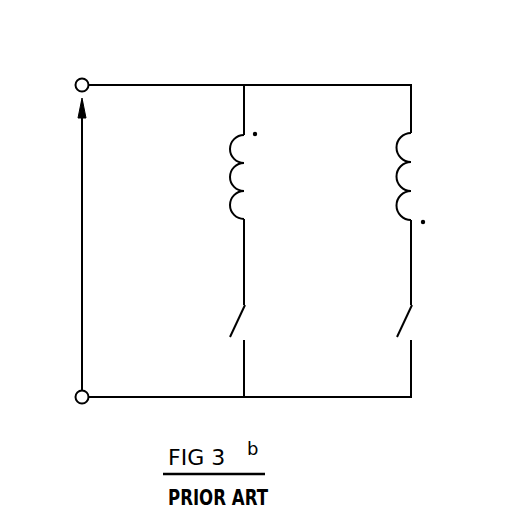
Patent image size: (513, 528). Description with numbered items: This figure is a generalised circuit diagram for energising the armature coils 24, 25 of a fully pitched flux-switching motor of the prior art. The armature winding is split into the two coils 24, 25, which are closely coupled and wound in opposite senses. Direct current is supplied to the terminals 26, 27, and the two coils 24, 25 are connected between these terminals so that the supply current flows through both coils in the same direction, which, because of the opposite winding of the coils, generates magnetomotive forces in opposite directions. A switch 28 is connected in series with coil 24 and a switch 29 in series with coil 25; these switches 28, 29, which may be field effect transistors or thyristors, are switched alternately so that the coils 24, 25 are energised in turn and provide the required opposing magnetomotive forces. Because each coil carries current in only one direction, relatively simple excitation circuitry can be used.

The armature coil 24 is at (228, 178).
The armature coil 25 is at (395, 178).
The terminal 26 is at (75, 80).
The terminal 27 is at (75, 405).
The switch 28 is at (237, 318).
The switch 29 is at (403, 318).